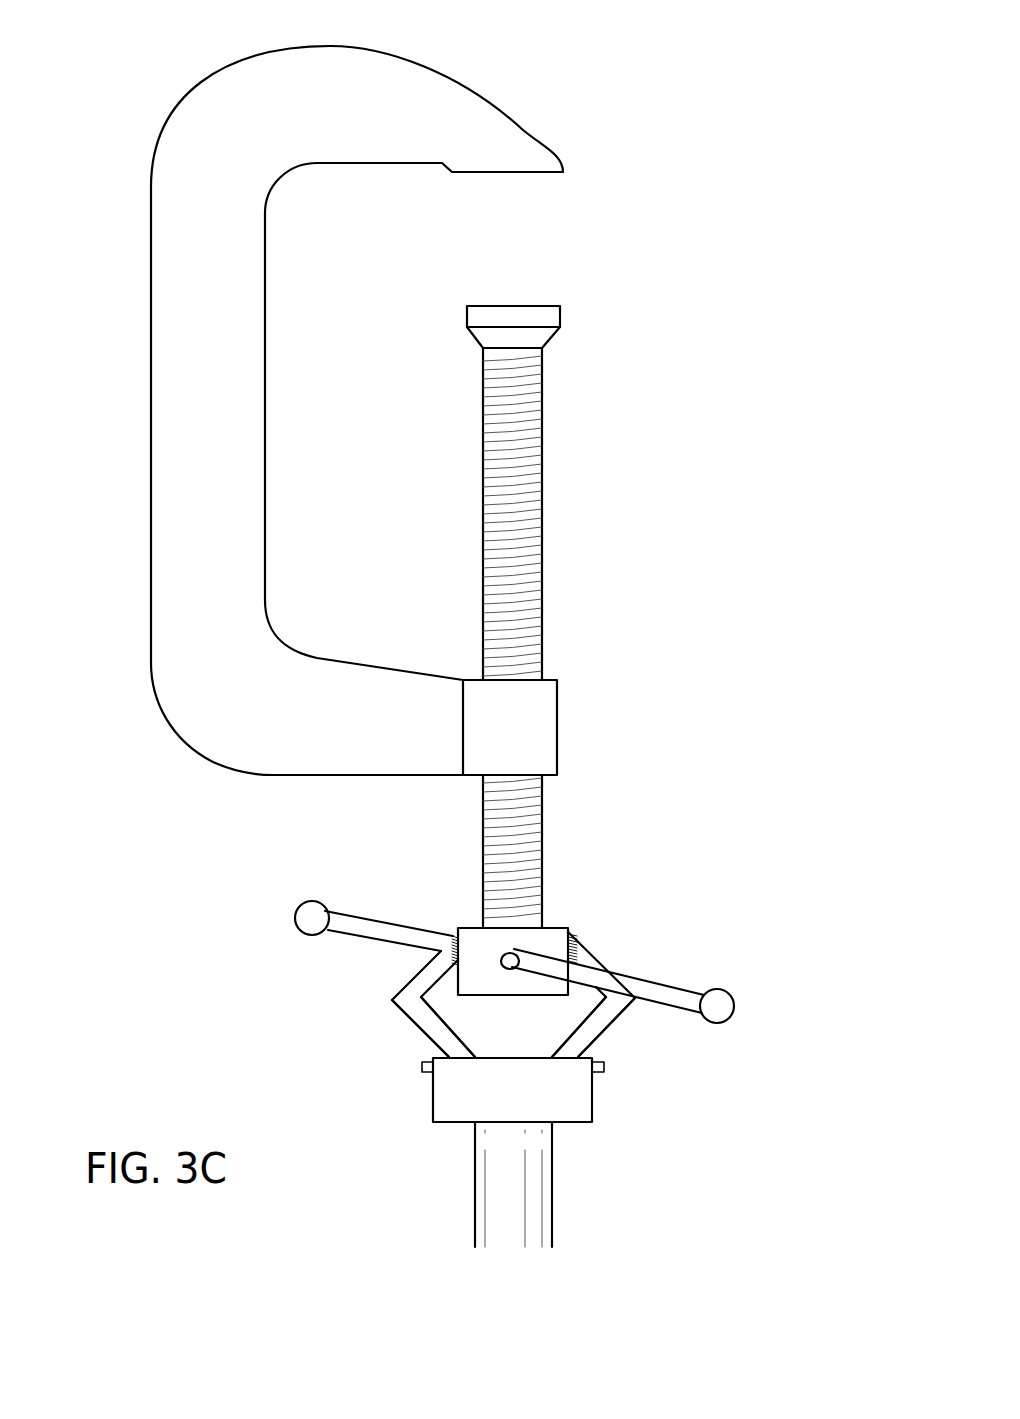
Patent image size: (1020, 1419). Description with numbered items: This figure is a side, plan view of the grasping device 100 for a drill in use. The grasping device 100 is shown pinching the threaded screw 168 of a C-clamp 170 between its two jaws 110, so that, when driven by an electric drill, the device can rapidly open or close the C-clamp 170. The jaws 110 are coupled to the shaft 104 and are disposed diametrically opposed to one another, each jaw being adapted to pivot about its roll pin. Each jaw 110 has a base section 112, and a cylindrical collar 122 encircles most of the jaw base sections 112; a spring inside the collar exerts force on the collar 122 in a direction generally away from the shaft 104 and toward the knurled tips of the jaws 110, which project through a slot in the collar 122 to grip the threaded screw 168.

The grasping device 100 is at (243, 917).
The shaft 104 is at (552, 1183).
The jaws 110 is at (399, 1030).
The base section 112 is at (400, 987).
The cylindrical collar 122 is at (593, 1087).
The threaded screw 168 is at (543, 578).
The C-clamp 170 is at (705, 530).